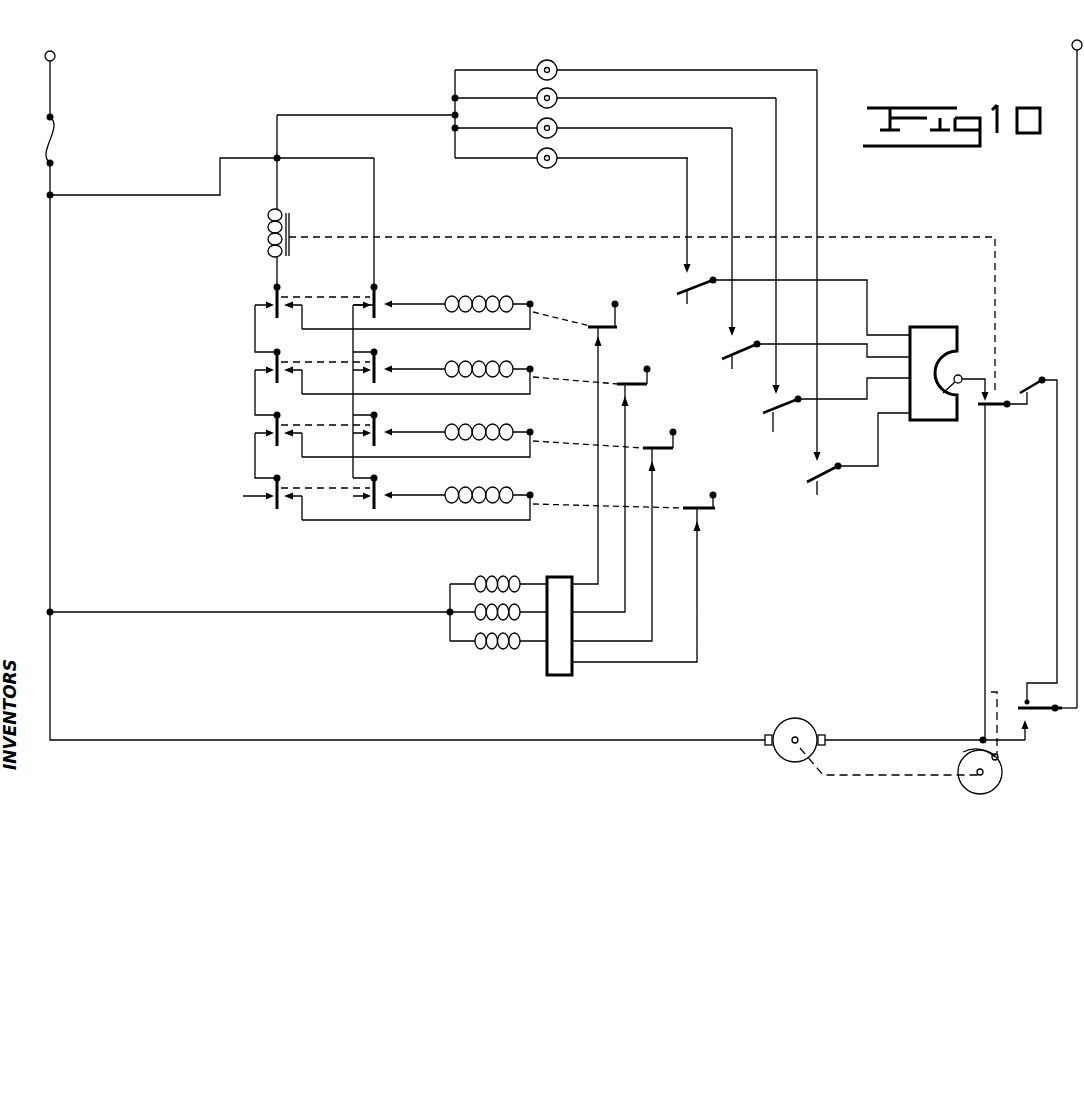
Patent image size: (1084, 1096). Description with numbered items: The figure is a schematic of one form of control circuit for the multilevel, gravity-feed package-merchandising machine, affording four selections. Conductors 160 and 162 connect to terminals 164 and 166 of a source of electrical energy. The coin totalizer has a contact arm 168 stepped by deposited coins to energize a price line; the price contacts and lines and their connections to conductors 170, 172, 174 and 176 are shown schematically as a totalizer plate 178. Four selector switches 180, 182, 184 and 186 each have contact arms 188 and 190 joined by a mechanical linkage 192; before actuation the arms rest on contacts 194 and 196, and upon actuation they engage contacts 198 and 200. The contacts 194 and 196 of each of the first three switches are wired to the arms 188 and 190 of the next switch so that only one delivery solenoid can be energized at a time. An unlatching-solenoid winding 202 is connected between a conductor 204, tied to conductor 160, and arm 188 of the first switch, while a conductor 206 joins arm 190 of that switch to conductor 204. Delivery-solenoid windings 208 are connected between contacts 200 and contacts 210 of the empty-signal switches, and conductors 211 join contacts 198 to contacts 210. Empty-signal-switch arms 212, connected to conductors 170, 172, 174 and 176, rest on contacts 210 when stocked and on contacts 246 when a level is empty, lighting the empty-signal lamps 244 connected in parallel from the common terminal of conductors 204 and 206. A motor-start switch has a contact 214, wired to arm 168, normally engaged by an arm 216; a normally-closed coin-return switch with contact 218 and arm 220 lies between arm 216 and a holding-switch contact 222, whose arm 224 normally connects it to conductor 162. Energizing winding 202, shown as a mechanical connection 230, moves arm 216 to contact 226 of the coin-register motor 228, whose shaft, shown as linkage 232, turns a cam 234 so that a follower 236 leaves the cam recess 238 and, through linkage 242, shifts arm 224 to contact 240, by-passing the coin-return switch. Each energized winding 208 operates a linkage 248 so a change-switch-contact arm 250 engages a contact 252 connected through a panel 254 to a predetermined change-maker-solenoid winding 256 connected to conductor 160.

The conductor 160 is at (53, 492).
The conductor 162 is at (1076, 252).
The terminal 164 is at (57, 56).
The terminal 166 is at (1073, 49).
The contact arm 168 is at (963, 376).
The conductor 170 is at (876, 314).
The conductor 172 is at (862, 350).
The conductor 174 is at (872, 402).
The conductor 176 is at (886, 468).
The totalizer plate 178 is at (928, 420).
The selector switch 180 is at (243, 306).
The selector switch 182 is at (243, 381).
The selector switch 184 is at (236, 434).
The selector switch 186 is at (236, 502).
The contact arm 188 is at (274, 291).
The contact arm 190 is at (380, 295).
The mechanical linkage 192 is at (323, 299).
The contact 194 is at (266, 309).
The contact 196 is at (368, 303).
The contact 198 is at (298, 306).
The contact 200 is at (404, 304).
The unlatching-solenoid winding 202 is at (268, 238).
The conductor 204 is at (146, 197).
The conductor 206 is at (377, 210).
The winding 208 is at (496, 296).
The contact 210 is at (684, 294).
The conductor 211 is at (532, 330).
The contact arm 212 is at (702, 288).
The contact 214 is at (1000, 384).
The arm 216 is at (988, 410).
The contact 218 is at (1032, 398).
The contact arm 220 is at (1043, 380).
The contact 222 is at (1027, 700).
The switch arm 224 is at (1044, 711).
The contact 226 is at (984, 418).
The coin-register motor 228 is at (806, 720).
The mechanical connection 230 is at (976, 236).
The linkage 232 is at (878, 772).
The cam 234 is at (996, 784).
The follower 236 is at (1002, 760).
The cam recess 238 is at (980, 752).
The contact 240 is at (1028, 738).
The linkage 242 is at (992, 702).
The empty-signal lamp 244 is at (560, 64).
The contact 246 is at (684, 270).
The linkage 248 is at (560, 316).
The change-switch-contact arm 250 is at (600, 322).
The contact 252 is at (604, 338).
The panel 254 is at (552, 576).
The change-maker-solenoid winding 256 is at (500, 575).